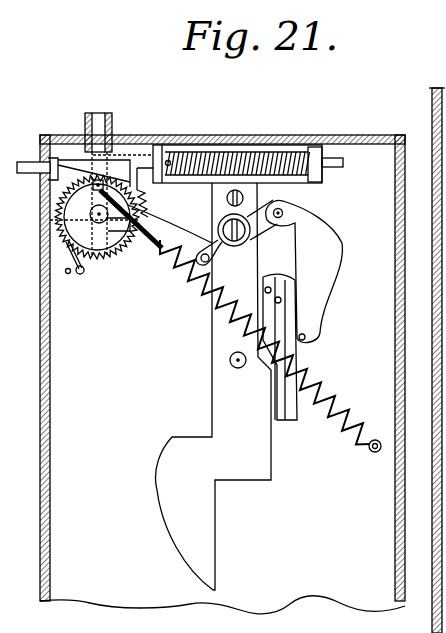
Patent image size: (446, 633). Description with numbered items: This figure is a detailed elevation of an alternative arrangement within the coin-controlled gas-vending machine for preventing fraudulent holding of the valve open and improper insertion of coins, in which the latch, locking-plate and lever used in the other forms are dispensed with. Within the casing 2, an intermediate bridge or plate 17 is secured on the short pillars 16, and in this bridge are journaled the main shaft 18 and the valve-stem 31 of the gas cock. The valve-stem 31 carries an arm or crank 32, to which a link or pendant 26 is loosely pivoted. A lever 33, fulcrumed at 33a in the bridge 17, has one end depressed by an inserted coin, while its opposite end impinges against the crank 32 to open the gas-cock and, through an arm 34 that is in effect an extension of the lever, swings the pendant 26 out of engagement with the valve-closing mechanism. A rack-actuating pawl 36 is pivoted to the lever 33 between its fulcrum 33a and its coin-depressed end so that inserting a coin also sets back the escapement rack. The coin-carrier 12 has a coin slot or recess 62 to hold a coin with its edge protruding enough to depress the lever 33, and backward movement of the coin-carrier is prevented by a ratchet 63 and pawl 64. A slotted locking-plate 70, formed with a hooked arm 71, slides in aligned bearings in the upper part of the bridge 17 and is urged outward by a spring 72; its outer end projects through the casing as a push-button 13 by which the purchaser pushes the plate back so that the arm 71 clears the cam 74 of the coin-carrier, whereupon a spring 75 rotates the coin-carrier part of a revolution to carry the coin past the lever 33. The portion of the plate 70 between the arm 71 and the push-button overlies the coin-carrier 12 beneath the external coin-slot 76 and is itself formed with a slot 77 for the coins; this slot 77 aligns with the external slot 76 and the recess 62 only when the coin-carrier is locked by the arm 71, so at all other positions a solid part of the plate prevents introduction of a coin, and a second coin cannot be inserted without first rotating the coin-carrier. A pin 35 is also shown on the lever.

The housing 2 is at (42, 467).
The coin-carrier 12 is at (65, 241).
The tube 13 is at (32, 163).
The short pillars 16 is at (227, 198).
The intermediate bridge or plate 17 is at (322, 178).
The main shaft 18 is at (230, 360).
The link or pendant 26 is at (304, 272).
The valve-stem 31 is at (236, 248).
The arm or crank 32 is at (284, 198).
The lever 33 is at (189, 225).
The fulcrum 33a is at (212, 252).
The arm 34 is at (296, 418).
The pin 35 is at (306, 336).
The rack-actuating pawl 36 is at (160, 242).
The coin slot or recess 62 is at (103, 265).
The ratchet 63 is at (118, 267).
The pawl 64 is at (78, 275).
The slotted locking-plate 70 is at (131, 153).
The hooked arm 71 is at (148, 200).
The spring 72 is at (248, 153).
The cam 74 is at (56, 210).
The spring 75 is at (320, 380).
The external coin-slot 76 is at (98, 118).
The slot 77 is at (90, 172).